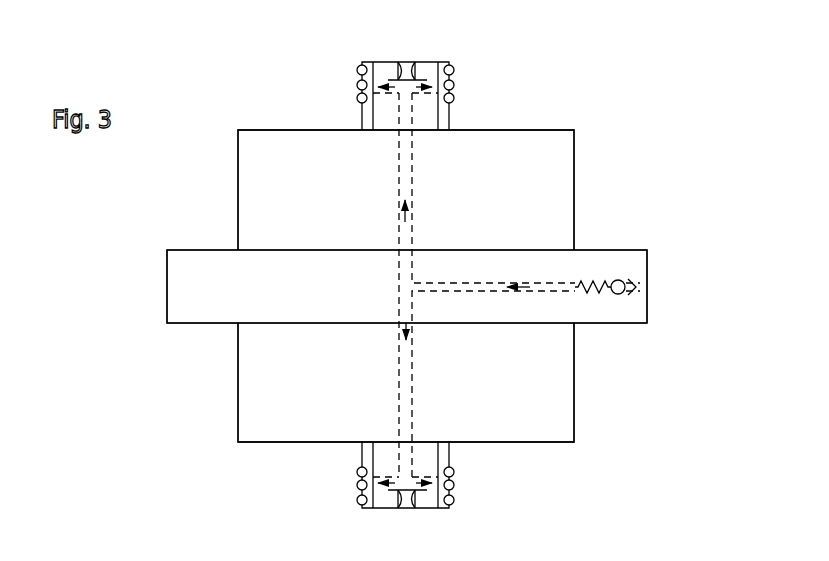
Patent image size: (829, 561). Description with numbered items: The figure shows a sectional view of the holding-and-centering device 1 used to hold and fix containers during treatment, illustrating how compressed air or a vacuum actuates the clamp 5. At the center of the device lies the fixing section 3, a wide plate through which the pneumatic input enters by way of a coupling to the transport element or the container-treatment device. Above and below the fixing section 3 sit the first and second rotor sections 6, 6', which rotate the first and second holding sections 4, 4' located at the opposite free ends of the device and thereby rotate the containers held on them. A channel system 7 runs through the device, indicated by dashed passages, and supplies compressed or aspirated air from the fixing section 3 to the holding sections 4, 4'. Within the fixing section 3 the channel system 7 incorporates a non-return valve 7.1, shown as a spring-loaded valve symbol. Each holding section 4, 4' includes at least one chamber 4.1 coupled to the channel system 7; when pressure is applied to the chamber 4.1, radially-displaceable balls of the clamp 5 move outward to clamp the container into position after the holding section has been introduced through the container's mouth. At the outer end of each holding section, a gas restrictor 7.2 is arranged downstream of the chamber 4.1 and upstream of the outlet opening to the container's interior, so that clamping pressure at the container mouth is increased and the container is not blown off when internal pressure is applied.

The holding-and-centering device 1 is at (590, 125).
The fixing section 3 is at (613, 249).
The first holding section 4 is at (370, 482).
The second holding section 4' is at (447, 88).
The chamber 4.1 is at (363, 115).
The clamp 5 is at (440, 50).
The first rotor section 6 is at (434, 382).
The second rotor section 6' is at (437, 190).
The channel system 7 is at (445, 281).
The non-return valve 7.1 is at (627, 283).
The gas restrictor 7.2 is at (402, 62).